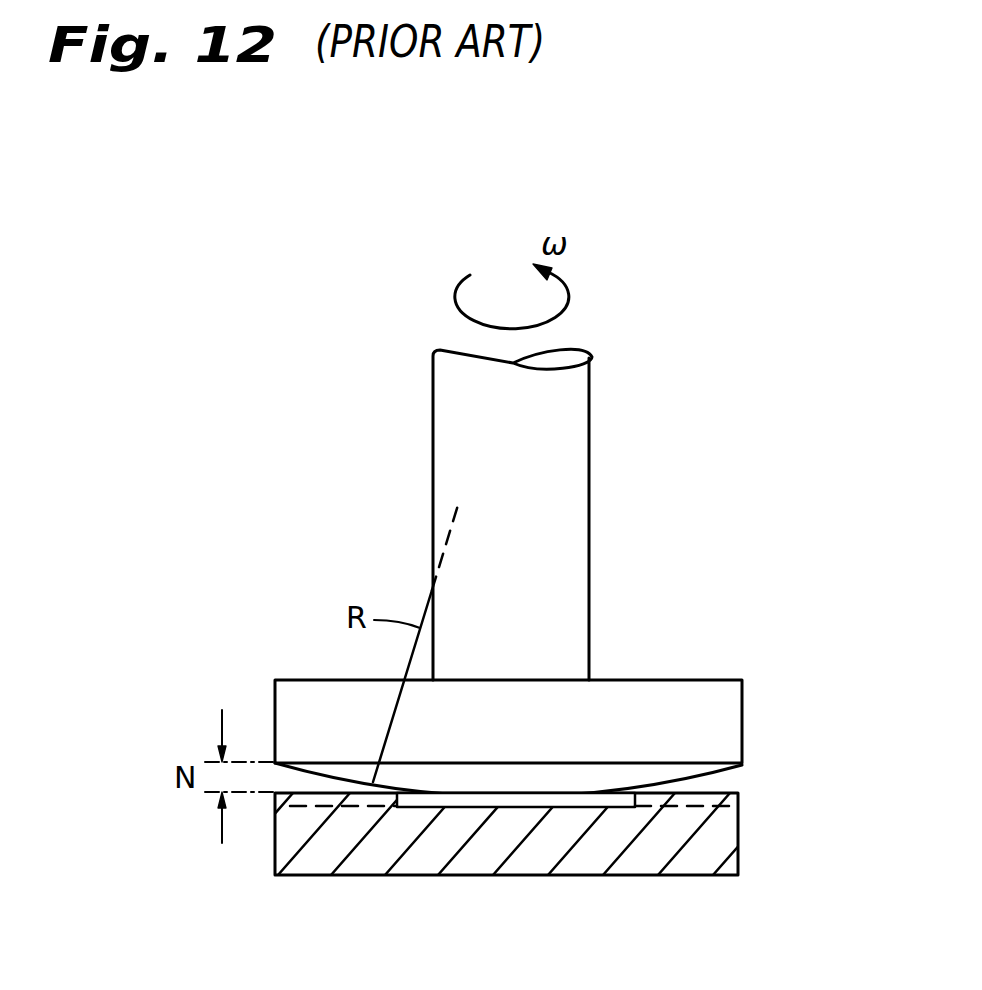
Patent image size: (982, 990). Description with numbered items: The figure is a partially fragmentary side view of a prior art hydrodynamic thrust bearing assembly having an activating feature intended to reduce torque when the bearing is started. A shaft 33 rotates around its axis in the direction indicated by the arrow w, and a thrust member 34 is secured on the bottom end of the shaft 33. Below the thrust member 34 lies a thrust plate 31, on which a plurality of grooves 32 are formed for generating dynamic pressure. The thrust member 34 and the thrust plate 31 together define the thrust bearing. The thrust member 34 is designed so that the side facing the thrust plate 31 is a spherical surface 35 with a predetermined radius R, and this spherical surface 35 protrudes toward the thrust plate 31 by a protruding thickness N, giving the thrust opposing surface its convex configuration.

The thrust plate 31 is at (725, 863).
The grooves 32 is at (723, 803).
The shaft 33 is at (561, 459).
The thrust member 34 is at (668, 705).
The spherical surface 35 is at (580, 777).